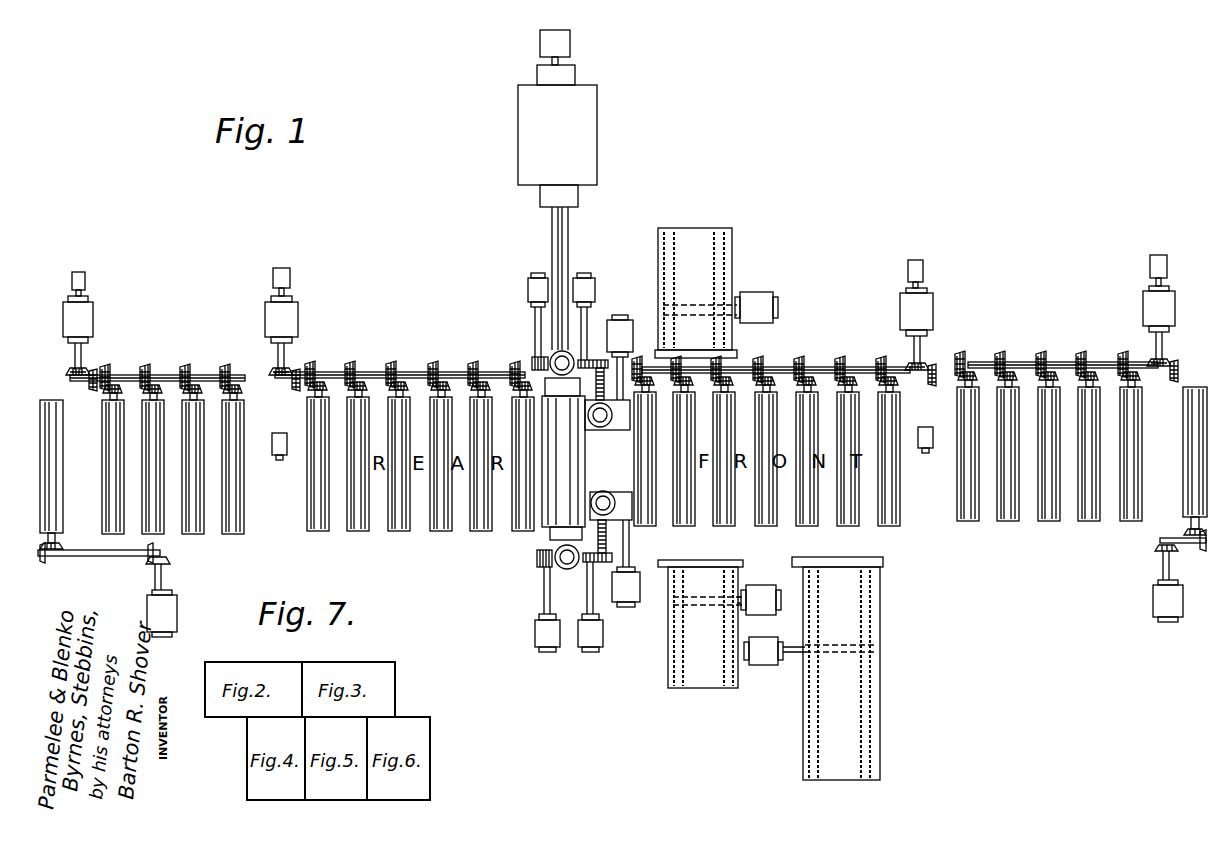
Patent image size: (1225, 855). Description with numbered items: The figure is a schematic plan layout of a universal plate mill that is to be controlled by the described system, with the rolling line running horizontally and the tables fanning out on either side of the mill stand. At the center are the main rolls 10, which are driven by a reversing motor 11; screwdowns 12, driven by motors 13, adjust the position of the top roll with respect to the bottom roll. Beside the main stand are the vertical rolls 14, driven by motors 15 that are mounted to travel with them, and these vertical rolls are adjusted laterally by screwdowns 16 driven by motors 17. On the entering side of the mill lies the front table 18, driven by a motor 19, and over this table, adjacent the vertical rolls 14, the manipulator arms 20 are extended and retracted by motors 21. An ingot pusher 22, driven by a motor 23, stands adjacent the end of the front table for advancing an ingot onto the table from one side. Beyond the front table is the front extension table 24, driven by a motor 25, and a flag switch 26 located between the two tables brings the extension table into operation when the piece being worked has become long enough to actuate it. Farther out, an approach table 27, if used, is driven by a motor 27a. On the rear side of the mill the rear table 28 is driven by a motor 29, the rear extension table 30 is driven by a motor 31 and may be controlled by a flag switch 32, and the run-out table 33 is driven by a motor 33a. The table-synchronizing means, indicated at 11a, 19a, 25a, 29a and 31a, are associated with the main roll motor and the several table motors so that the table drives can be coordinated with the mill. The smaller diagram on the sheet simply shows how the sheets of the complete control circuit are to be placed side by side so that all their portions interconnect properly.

The main rolls 10 is at (545, 522).
The reversing motor 11 is at (597, 130).
The table-synchronizing means 11a is at (570, 43).
The screwdowns 12 is at (531, 358).
The motors 13 is at (528, 290).
The vertical rolls 14 is at (602, 430).
The motors 15 is at (617, 330).
The screwdowns 16 is at (583, 396).
The motors 17 is at (595, 290).
The front table 18 is at (792, 512).
The motor 19 is at (900, 312).
The table-synchronizing means 19a is at (923, 270).
The manipulator arms 20 is at (733, 340).
The motors 21 is at (752, 300).
The ingot pusher 22 is at (870, 560).
The motor 23 is at (757, 655).
The front extension table 24 is at (1076, 510).
The motor 25 is at (1143, 305).
The table-synchronizing means 25a is at (1150, 268).
The flag switch 26 is at (923, 427).
The approach table 27 is at (1190, 460).
The motor 27a is at (1153, 600).
The rear table 28 is at (430, 518).
The motor 29 is at (298, 315).
The table-synchronizing means 29a is at (290, 278).
The rear extension table 30 is at (173, 520).
The motor 31 is at (93, 320).
The table-synchronizing means 31a is at (85, 280).
The flag switch 32 is at (268, 458).
The run-out table 33 is at (78, 482).
The motor 33a is at (177, 610).